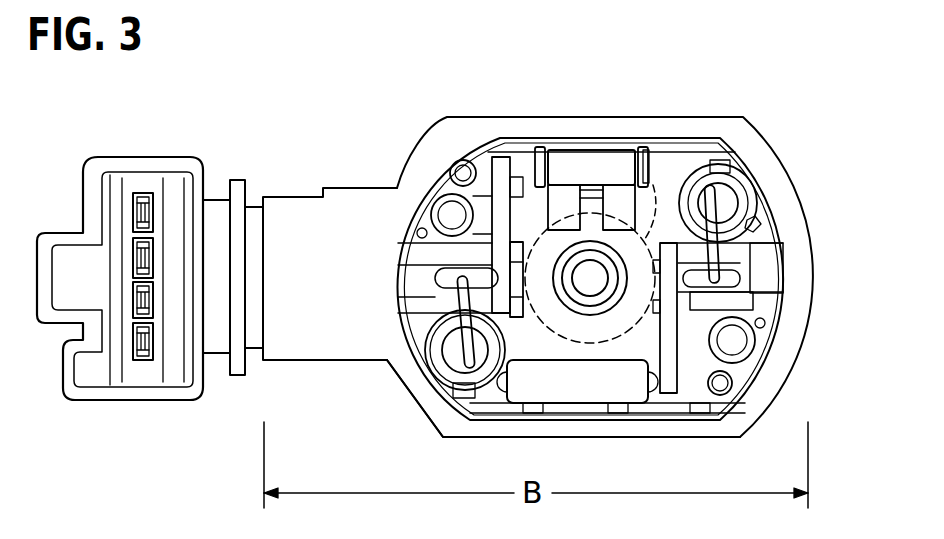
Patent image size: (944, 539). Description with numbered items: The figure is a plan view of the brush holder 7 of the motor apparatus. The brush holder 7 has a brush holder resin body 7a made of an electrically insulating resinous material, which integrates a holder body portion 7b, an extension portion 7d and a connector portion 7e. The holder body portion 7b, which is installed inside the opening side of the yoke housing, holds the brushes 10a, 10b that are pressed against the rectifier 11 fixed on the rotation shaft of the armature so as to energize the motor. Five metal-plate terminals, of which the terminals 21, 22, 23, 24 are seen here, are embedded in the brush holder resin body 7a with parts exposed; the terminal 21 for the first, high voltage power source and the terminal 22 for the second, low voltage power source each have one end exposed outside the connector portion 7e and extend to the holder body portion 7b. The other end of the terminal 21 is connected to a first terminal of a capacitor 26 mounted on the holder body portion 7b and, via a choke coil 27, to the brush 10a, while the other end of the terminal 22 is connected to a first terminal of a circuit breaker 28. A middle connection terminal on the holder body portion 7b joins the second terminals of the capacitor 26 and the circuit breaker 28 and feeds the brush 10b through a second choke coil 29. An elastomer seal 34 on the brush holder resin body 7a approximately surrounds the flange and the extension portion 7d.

The brush holder 7 is at (771, 112).
The brush holder resin body 7a is at (673, 163).
The holder body portion 7b is at (773, 250).
The extension portion 7d is at (253, 342).
The connector portion 7e is at (152, 401).
The terminal 21 is at (143, 197).
The terminal 22 is at (140, 251).
The terminal 23 is at (138, 302).
The terminal 24 is at (133, 340).
The capacitor 26 is at (588, 393).
The choke coil 27 is at (440, 367).
The circuit breaker 28 is at (592, 160).
The choke coil 29 is at (735, 185).
The brush 10a is at (482, 237).
The brush 10b is at (639, 318).
The rectifier 11 is at (664, 196).
The seal 34 is at (457, 438).